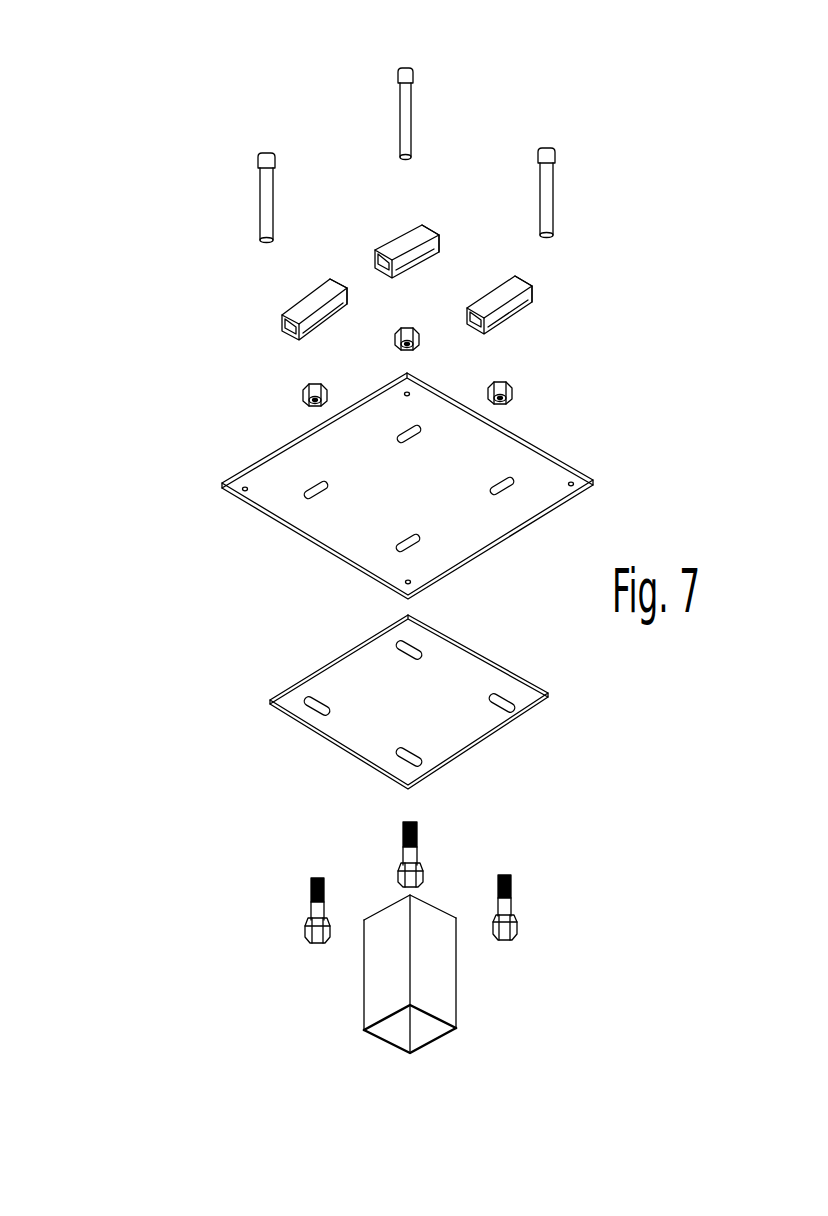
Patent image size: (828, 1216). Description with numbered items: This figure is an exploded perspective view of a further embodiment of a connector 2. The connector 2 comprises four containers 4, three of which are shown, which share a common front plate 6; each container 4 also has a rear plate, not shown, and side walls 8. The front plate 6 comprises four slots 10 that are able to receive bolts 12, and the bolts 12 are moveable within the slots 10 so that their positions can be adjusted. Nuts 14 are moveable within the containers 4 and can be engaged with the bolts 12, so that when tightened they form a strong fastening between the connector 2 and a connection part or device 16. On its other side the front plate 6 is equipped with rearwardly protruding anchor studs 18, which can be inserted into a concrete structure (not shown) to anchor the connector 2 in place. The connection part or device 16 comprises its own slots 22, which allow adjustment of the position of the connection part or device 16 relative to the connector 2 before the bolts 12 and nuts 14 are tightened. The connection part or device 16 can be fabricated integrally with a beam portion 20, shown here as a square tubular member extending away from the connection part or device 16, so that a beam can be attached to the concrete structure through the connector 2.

The connector 2 is at (172, 574).
The container 4 is at (398, 232).
The front plate 6 is at (283, 467).
The side wall 8 is at (428, 240).
The slot 10 is at (420, 441).
The bolt 12 is at (410, 822).
The nut 14 is at (396, 338).
The connection part or device 16 is at (271, 700).
The anchor stud 18 is at (398, 63).
The beam portion 20 is at (443, 1037).
The slot 22 is at (420, 654).